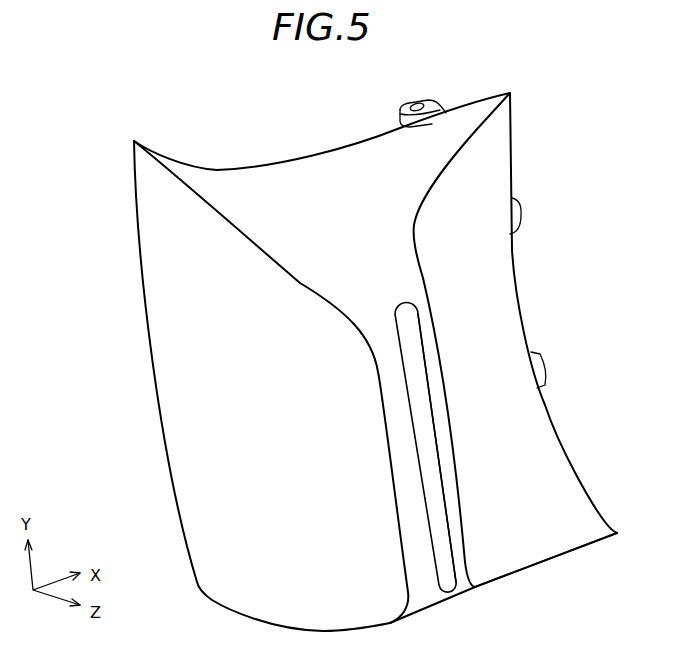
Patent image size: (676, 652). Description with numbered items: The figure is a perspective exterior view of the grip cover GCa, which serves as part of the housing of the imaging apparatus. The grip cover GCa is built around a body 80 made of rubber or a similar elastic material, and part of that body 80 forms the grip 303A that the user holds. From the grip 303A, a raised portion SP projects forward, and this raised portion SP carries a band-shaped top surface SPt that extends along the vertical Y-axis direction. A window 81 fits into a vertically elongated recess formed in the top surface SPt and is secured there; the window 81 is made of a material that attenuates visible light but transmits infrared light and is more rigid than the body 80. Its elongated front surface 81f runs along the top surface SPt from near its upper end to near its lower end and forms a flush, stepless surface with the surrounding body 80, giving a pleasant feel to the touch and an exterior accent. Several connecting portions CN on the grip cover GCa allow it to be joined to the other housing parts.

The body 80 is at (162, 322).
The grip 303A is at (252, 353).
The raised portion SP is at (487, 306).
The top surface SPt is at (479, 433).
The window 81 is at (448, 590).
The front surface 81f is at (456, 505).
The connecting portion CN is at (400, 110).
The grip cover GCa is at (102, 118).